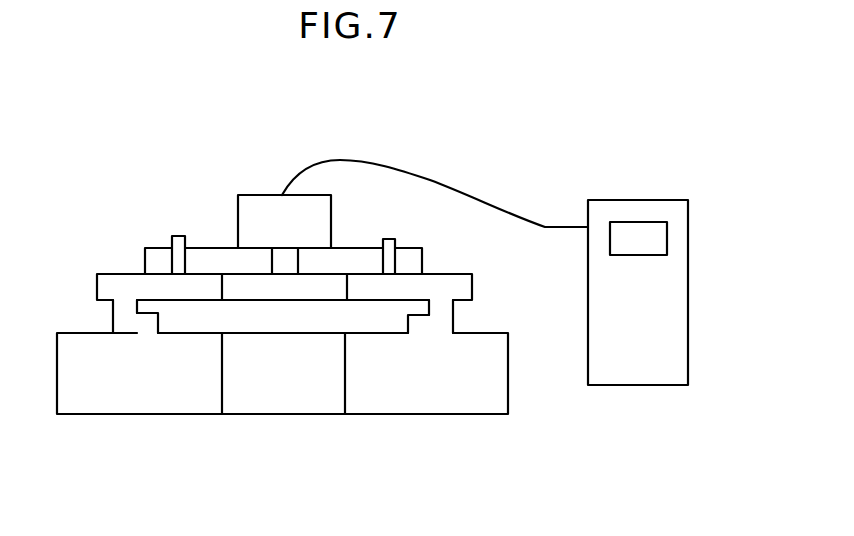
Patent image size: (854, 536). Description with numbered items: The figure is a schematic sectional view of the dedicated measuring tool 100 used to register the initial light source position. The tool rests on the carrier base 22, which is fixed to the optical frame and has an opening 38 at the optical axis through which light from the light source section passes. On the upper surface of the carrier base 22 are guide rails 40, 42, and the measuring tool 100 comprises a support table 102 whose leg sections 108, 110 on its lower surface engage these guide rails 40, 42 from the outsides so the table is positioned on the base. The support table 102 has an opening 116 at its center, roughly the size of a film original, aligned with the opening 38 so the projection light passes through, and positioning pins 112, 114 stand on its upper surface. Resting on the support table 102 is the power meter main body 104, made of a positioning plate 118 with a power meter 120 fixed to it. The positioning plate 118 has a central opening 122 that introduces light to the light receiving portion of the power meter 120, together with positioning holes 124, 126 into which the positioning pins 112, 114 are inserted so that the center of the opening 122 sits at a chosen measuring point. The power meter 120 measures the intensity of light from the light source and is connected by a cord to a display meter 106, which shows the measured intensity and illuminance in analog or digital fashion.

The measuring tool 100 is at (396, 122).
The power meter main body 104 is at (183, 175).
The power meter 120 is at (262, 218).
The positioning pin 112 is at (177, 233).
The positioning hole 124 is at (206, 257).
The opening 122 is at (278, 266).
The positioning plate 118 is at (365, 262).
The positioning pin 114 is at (392, 238).
The positioning hole 126 is at (395, 258).
The support table 102 is at (450, 288).
The opening 116 is at (228, 296).
The leg section 108 is at (128, 313).
The guide rail 40 is at (147, 323).
The leg section 110 is at (443, 318).
The guide rail 42 is at (418, 323).
The carrier base 22 is at (457, 396).
The opening 38 is at (226, 400).
The display meter 106 is at (670, 297).